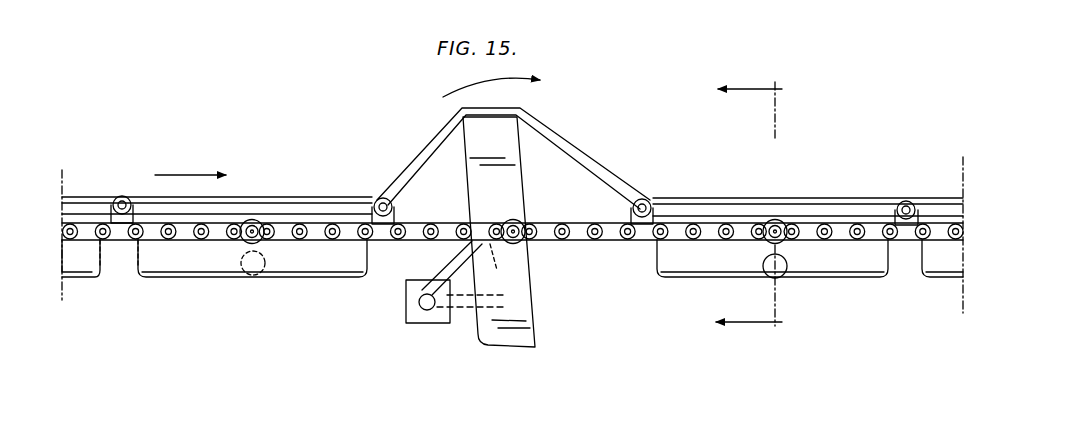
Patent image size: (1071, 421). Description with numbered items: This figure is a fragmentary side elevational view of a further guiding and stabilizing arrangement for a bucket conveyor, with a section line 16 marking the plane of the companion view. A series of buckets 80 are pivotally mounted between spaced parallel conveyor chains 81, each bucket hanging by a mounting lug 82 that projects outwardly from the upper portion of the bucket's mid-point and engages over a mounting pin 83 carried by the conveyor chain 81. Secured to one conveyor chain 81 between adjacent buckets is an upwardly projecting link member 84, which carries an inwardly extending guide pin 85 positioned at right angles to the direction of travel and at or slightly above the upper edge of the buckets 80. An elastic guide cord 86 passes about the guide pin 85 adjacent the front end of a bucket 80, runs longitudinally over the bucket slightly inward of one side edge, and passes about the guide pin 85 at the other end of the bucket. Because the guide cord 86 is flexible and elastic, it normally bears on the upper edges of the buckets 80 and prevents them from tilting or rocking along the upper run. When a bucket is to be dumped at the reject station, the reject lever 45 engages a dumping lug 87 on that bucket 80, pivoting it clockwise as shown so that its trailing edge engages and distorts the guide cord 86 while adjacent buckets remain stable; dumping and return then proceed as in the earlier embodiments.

The section line 16- 16 is at (766, 204).
The reject lever 45 is at (458, 264).
The bucket 80 is at (140, 268).
The conveyor chain 81 is at (621, 300).
The mounting lug 82 is at (262, 240).
The mounting pin 83 is at (253, 226).
The link member 84 is at (128, 204).
The guide pin 85 is at (123, 197).
The guide cord 86 is at (81, 212).
The dumping lug 87 is at (245, 274).